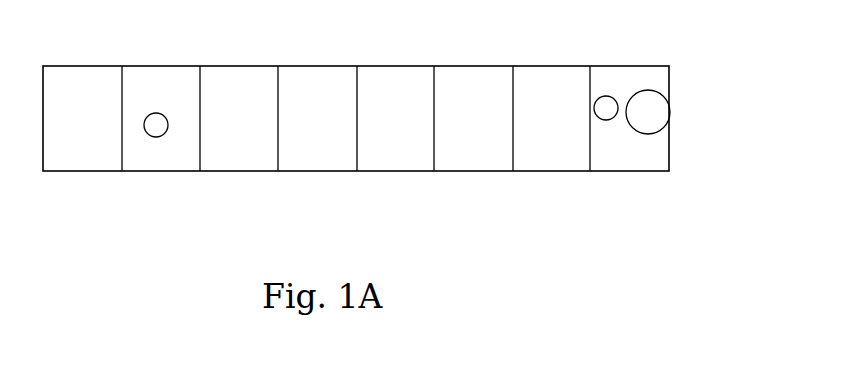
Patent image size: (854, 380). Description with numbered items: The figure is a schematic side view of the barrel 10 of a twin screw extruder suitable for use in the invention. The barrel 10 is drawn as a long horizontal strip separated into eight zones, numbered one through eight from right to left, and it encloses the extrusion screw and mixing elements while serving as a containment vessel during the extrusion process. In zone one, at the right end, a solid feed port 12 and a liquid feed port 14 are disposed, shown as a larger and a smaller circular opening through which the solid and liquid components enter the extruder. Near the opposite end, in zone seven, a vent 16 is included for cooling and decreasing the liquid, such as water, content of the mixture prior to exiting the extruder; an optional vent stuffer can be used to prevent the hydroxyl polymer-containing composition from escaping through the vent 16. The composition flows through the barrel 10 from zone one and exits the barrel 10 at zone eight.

The barrel 10 is at (633, 181).
The solid feed port 12 is at (654, 112).
The liquid feed port 14 is at (604, 110).
The vent 16 is at (155, 127).